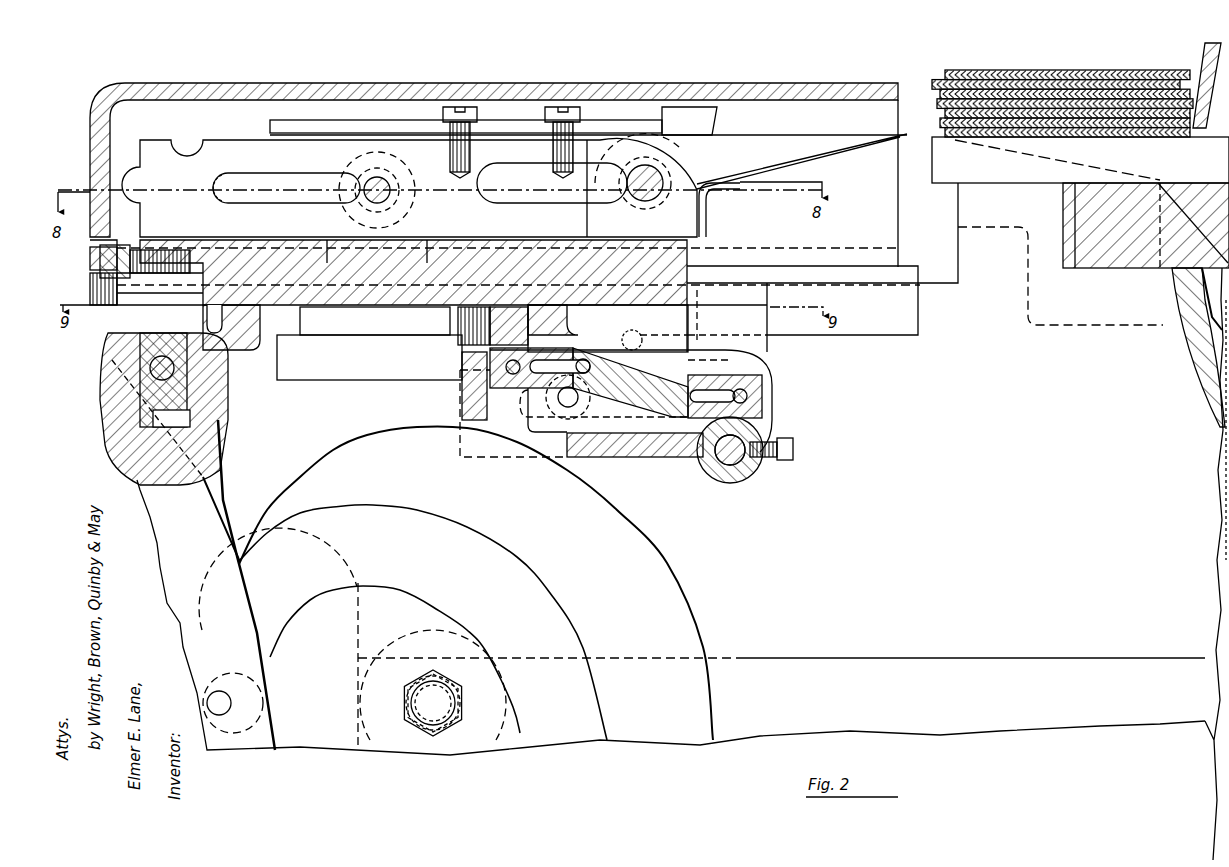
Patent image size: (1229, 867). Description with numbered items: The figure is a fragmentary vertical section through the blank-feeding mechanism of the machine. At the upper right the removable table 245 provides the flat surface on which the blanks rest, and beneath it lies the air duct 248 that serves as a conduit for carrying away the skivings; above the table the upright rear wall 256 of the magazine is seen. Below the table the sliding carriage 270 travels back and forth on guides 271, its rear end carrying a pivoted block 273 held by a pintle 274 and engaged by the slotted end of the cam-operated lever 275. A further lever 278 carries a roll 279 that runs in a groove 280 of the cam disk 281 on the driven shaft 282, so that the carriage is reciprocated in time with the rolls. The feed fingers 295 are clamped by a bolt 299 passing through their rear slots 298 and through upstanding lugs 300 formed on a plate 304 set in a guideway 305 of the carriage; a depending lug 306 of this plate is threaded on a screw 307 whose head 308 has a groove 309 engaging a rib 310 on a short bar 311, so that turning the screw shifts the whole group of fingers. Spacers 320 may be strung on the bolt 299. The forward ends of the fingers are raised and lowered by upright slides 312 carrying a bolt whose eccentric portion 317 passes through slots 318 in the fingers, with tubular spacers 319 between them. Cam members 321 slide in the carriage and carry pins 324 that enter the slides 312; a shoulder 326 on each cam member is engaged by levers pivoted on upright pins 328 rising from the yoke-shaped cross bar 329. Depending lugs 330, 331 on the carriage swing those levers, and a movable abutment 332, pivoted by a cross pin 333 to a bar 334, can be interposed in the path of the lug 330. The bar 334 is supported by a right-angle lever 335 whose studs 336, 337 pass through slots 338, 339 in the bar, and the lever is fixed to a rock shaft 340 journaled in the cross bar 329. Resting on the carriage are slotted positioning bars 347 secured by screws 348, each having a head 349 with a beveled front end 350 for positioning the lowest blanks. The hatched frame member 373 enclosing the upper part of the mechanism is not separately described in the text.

The table 245 is at (1025, 165).
The air duct 248 is at (1187, 332).
The upright rear wall 256 is at (1205, 48).
The sliding carriage 270 is at (687, 258).
The guides 271 is at (832, 273).
The block 273 is at (175, 400).
The pintle 274 is at (172, 370).
The cam-operated lever 275 is at (210, 498).
The lever 278 is at (270, 743).
The roll 279 is at (243, 668).
The groove 280 is at (487, 567).
The cam disk 281 is at (458, 583).
The shaft 282 is at (445, 705).
The feeding fingers 295 is at (505, 155).
The longitudinal slot 298 is at (286, 203).
The bolt 299 is at (373, 197).
The upstanding lugs 300 is at (343, 183).
The plate 304 is at (377, 250).
The guideway 305 is at (423, 290).
The depending lug 306 is at (160, 291).
The screw 307 is at (137, 243).
The head 308 is at (102, 235).
The groove 309 is at (112, 245).
The rib 310 is at (110, 322).
The short bar 311 is at (92, 318).
The upright slides 312 is at (600, 190).
The eccentric portion 317 is at (665, 168).
The slots 318 is at (537, 158).
The tubular spacers 319 is at (637, 196).
The spacers 320 is at (377, 187).
The cam members 321 is at (768, 355).
The pins 324 is at (632, 333).
The shoulder 326 is at (302, 322).
The upright pins 328 is at (670, 324).
The cross bar 329 is at (622, 457).
The depending lug 330 is at (562, 323).
The depending lug 331 is at (253, 340).
The movable abutment 332 is at (490, 386).
The cross pin 333 is at (520, 400).
The bar 334 is at (667, 423).
The right-angle lever 335 is at (733, 367).
The stud 336 is at (773, 396).
The stud 337 is at (580, 358).
The longitudinal slot 338 is at (718, 396).
The longitudinal slot 339 is at (560, 367).
The rock shaft 340 is at (735, 468).
The positioning bars 347 is at (333, 128).
The screws 348 is at (443, 105).
The head 349 is at (688, 117).
The beveled front end 350 is at (717, 121).
The housing 373 is at (205, 90).